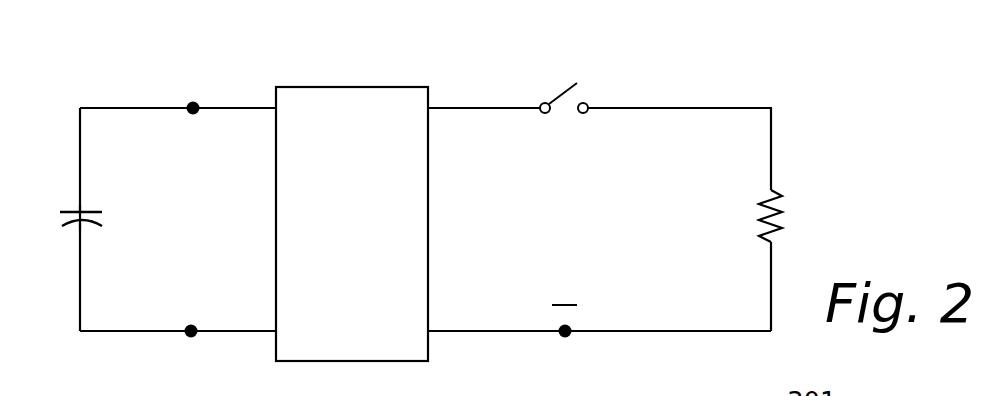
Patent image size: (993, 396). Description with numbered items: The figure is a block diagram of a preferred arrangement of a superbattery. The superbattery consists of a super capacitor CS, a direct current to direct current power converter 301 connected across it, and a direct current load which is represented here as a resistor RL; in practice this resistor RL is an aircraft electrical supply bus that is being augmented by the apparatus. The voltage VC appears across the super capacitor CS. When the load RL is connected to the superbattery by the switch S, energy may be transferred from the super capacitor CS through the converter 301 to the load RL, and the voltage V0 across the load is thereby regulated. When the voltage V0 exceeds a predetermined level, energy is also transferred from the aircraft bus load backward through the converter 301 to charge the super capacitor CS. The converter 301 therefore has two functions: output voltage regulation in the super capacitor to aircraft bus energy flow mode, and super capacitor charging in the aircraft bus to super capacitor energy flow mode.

The DC-DC converter 301 is at (357, 83).
The switch S is at (564, 83).
The super capacitor CS is at (101, 226).
The resistor RL is at (785, 216).
The capacitor voltage VC is at (50, 224).
The voltage across the load V0 is at (566, 251).